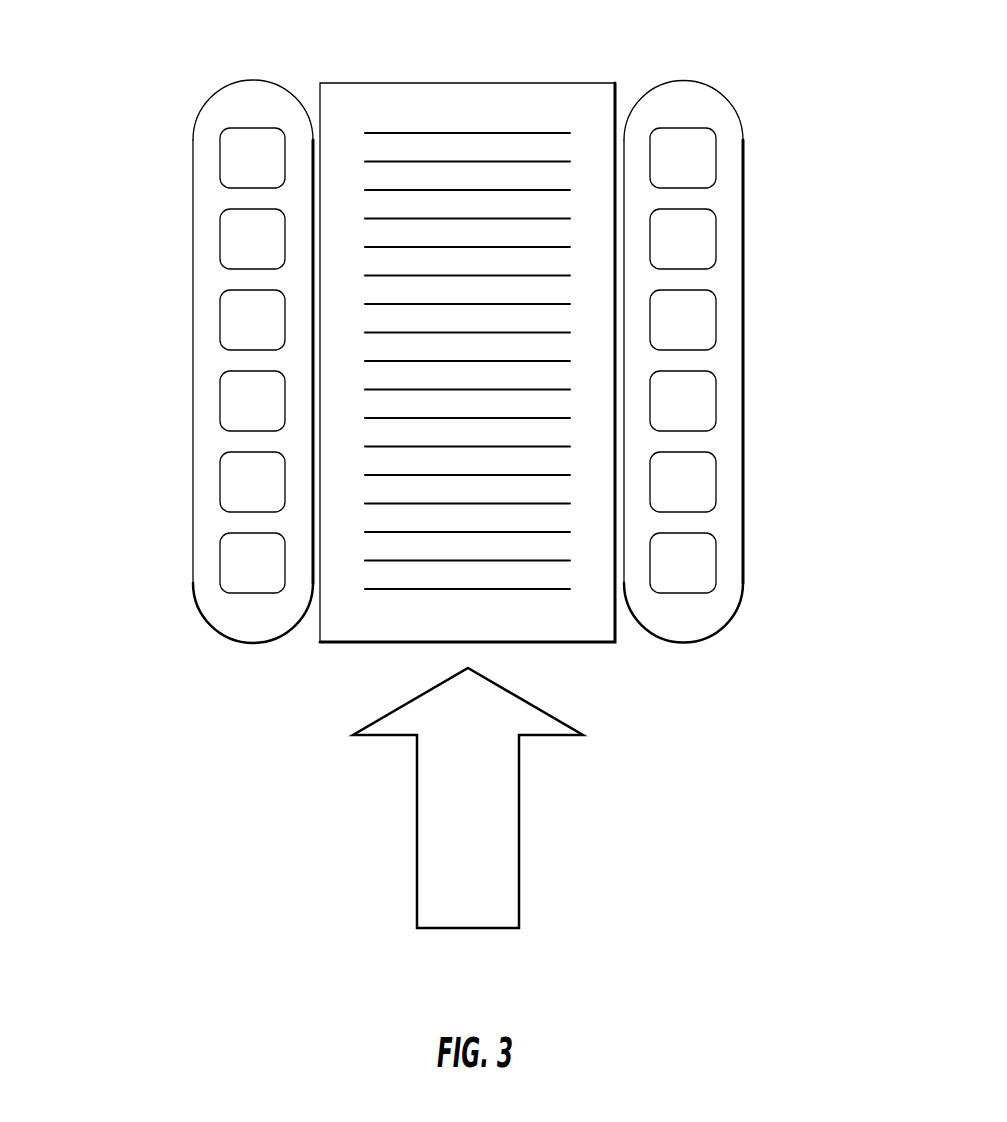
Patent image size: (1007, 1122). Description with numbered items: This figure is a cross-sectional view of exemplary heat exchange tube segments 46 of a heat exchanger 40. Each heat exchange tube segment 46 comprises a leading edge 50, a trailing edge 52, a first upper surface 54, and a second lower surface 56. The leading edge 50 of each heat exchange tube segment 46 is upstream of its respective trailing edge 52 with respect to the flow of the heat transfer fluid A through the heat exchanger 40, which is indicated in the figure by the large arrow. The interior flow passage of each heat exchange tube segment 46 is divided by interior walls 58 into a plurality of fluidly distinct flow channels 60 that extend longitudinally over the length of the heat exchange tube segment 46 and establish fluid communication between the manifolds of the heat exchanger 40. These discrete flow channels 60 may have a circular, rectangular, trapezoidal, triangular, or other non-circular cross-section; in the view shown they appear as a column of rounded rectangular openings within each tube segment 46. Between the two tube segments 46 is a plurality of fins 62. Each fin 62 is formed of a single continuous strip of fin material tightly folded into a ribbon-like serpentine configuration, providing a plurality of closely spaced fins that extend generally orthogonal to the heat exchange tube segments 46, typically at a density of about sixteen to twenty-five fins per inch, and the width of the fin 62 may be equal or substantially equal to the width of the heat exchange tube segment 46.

The heat exchanger 40 is at (106, 720).
The heat exchange tube segment 46 is at (184, 553).
The leading edge 50 is at (247, 643).
The trailing edge 52 is at (243, 80).
The first upper surface 54 is at (195, 450).
The second lower surface 56 is at (743, 415).
The interior walls 58 is at (252, 198).
The flow channels 60 is at (250, 245).
The fins 62 is at (448, 163).
The heat transfer fluid A is at (520, 829).